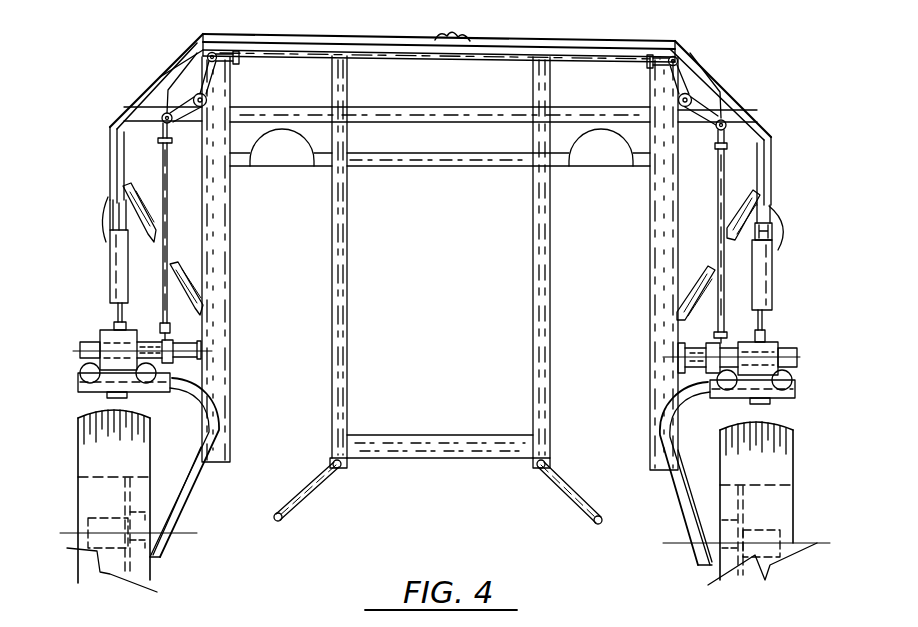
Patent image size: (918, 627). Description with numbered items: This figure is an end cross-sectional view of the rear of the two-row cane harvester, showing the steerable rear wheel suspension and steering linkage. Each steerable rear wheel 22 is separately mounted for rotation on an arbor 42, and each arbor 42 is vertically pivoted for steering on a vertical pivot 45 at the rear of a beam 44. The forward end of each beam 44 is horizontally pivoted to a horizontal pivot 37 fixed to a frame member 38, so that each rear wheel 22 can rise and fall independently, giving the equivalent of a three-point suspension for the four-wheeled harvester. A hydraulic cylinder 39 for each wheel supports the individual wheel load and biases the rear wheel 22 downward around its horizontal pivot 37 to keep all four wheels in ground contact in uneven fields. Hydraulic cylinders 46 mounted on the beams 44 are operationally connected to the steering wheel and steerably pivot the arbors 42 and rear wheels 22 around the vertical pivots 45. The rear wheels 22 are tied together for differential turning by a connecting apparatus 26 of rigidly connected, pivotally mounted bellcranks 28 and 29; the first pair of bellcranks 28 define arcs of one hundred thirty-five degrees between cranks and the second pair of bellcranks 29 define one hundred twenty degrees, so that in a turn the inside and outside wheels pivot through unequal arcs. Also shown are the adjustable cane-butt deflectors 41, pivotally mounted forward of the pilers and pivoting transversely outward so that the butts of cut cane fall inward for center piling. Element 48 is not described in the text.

The steerable rear wheel 22 is at (78, 437).
The connecting apparatus 26 is at (451, 58).
The bellcrank 28 is at (172, 110).
The bellcrank 29 is at (165, 333).
The horizontal pivot 37 is at (89, 340).
The frame member 38 is at (230, 260).
The hydraulic cylinder 39 is at (112, 253).
The cane-butt deflector 41 is at (308, 498).
The arbor 42 is at (202, 492).
The beam 44 is at (106, 326).
The vertical pivot 45 is at (110, 398).
The hydraulic cylinder 46 is at (80, 371).
The frame 48 is at (228, 35).